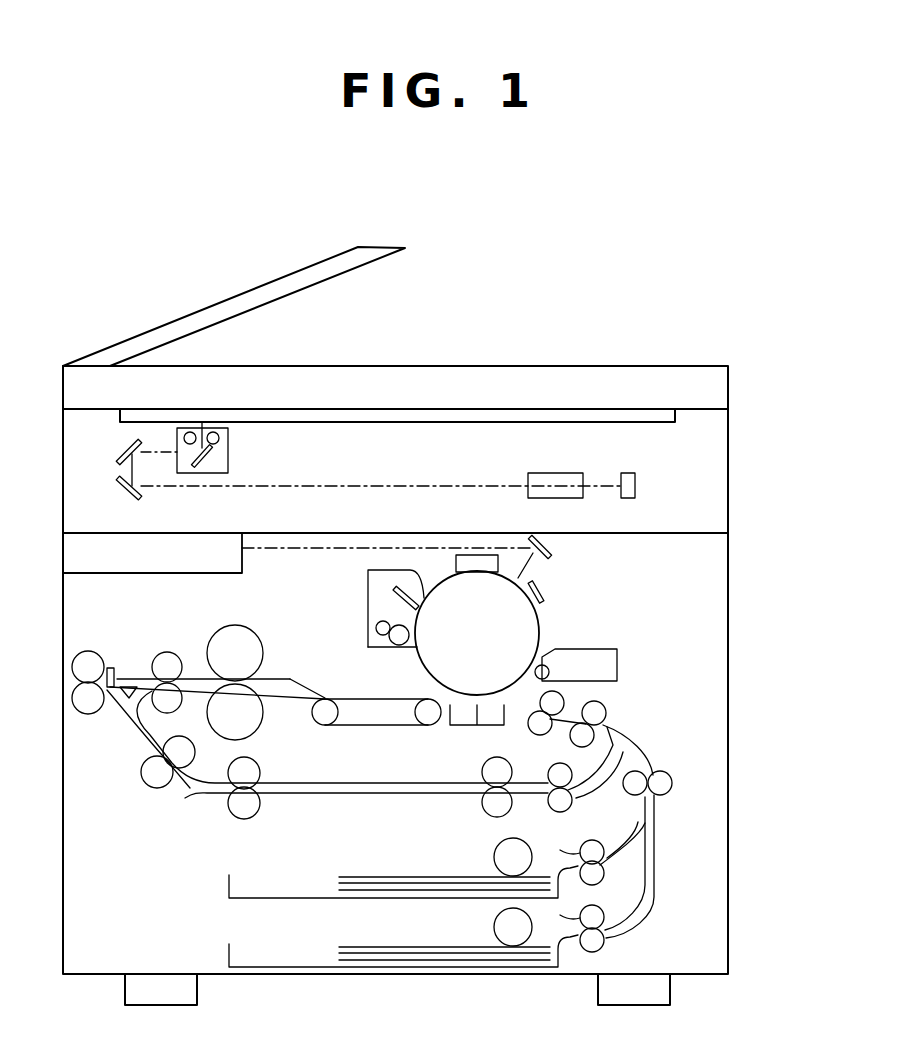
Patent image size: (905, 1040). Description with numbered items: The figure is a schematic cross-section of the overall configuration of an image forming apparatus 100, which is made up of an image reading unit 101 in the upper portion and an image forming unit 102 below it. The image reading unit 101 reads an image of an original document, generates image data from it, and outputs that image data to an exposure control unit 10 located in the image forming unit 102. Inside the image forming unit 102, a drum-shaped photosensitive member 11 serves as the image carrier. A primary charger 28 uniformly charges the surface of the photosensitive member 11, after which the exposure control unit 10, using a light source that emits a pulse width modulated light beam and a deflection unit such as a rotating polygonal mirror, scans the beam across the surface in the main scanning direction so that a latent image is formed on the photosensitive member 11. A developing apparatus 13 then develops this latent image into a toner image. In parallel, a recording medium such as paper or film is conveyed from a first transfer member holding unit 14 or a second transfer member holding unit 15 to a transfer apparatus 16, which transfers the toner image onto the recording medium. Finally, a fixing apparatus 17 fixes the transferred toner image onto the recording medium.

The image forming apparatus 100 is at (714, 340).
The image reading unit 101 is at (735, 366).
The image forming unit 102 is at (735, 537).
The exposure control unit 10 is at (186, 548).
The photosensitive member 11 is at (541, 617).
The primary charger 28 is at (455, 567).
The developing apparatus 13 is at (605, 650).
The fixing apparatus 17 is at (262, 717).
The transfer apparatus 16 is at (467, 725).
The first transfer member holding unit 14 is at (228, 887).
The second transfer member holding unit 15 is at (228, 957).